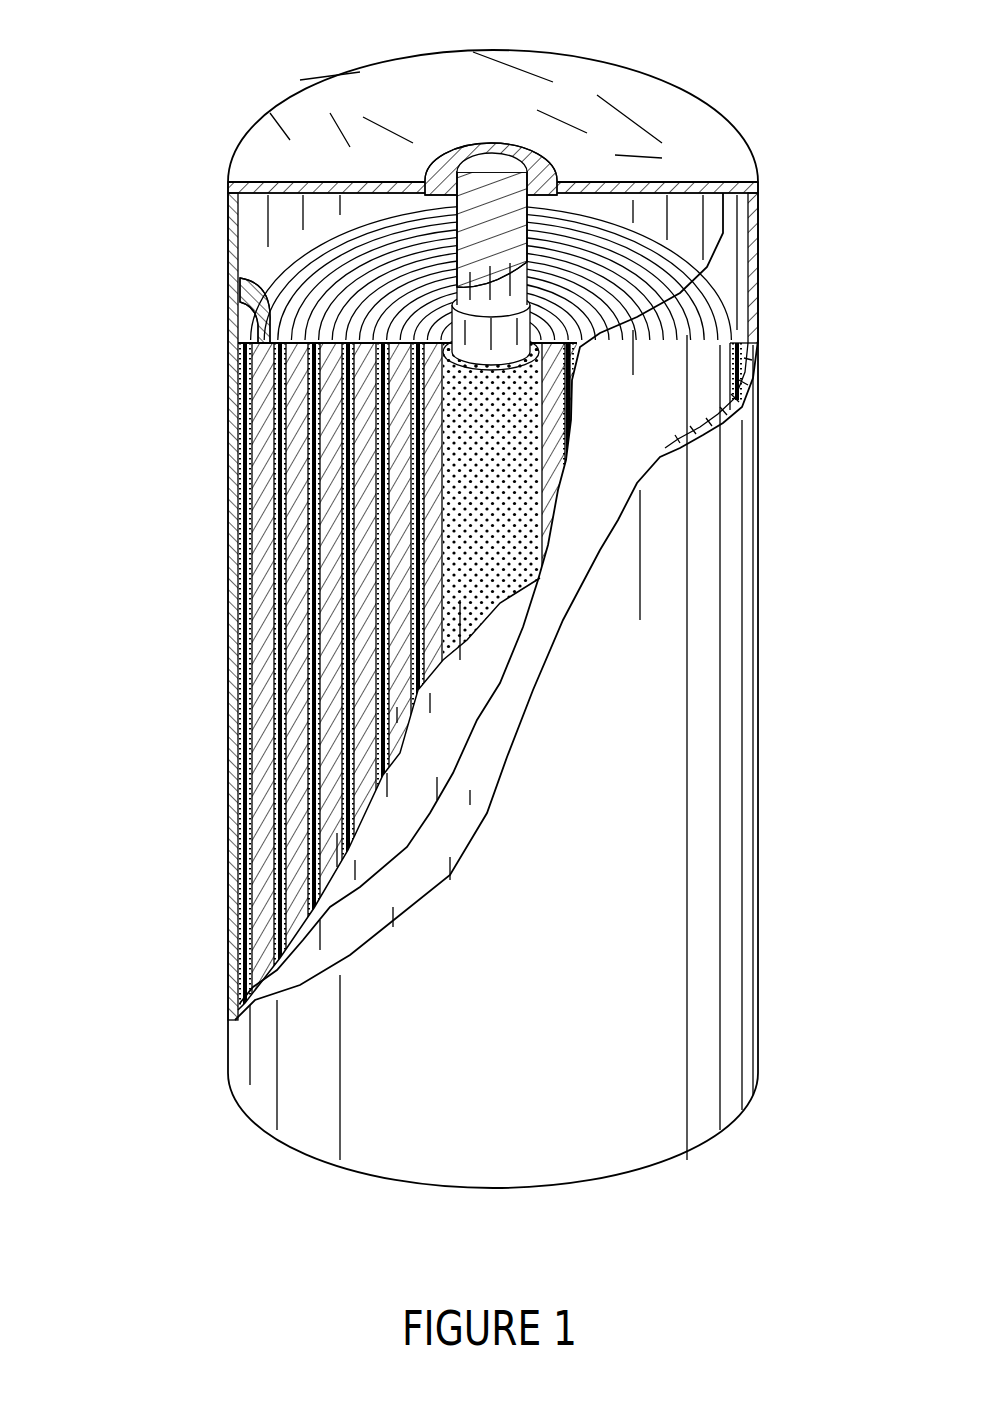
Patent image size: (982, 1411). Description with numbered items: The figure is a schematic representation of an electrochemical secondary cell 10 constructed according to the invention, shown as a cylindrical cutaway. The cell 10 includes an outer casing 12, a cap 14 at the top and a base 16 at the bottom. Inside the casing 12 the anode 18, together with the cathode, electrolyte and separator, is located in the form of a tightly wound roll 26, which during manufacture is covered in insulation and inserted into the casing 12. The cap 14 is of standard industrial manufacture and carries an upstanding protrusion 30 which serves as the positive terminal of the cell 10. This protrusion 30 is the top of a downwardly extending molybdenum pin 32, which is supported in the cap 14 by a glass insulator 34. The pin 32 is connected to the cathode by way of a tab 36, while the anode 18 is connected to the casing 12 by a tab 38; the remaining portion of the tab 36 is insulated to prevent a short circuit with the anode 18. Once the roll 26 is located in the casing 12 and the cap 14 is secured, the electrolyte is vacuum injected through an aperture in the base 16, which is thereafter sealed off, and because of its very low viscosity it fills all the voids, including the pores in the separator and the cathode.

The electrochemical cell 10 is at (136, 458).
The outer casing 12 is at (230, 645).
The cap 14 is at (307, 97).
The base 16 is at (326, 1160).
The anode 18 is at (258, 396).
The tightly wound roll 26 is at (305, 965).
The upstanding protrusion 30 is at (507, 160).
The molybdenum pin 32 is at (513, 245).
The glass insulator 34 is at (537, 163).
The tab 36 is at (535, 338).
The tab 38 is at (246, 272).